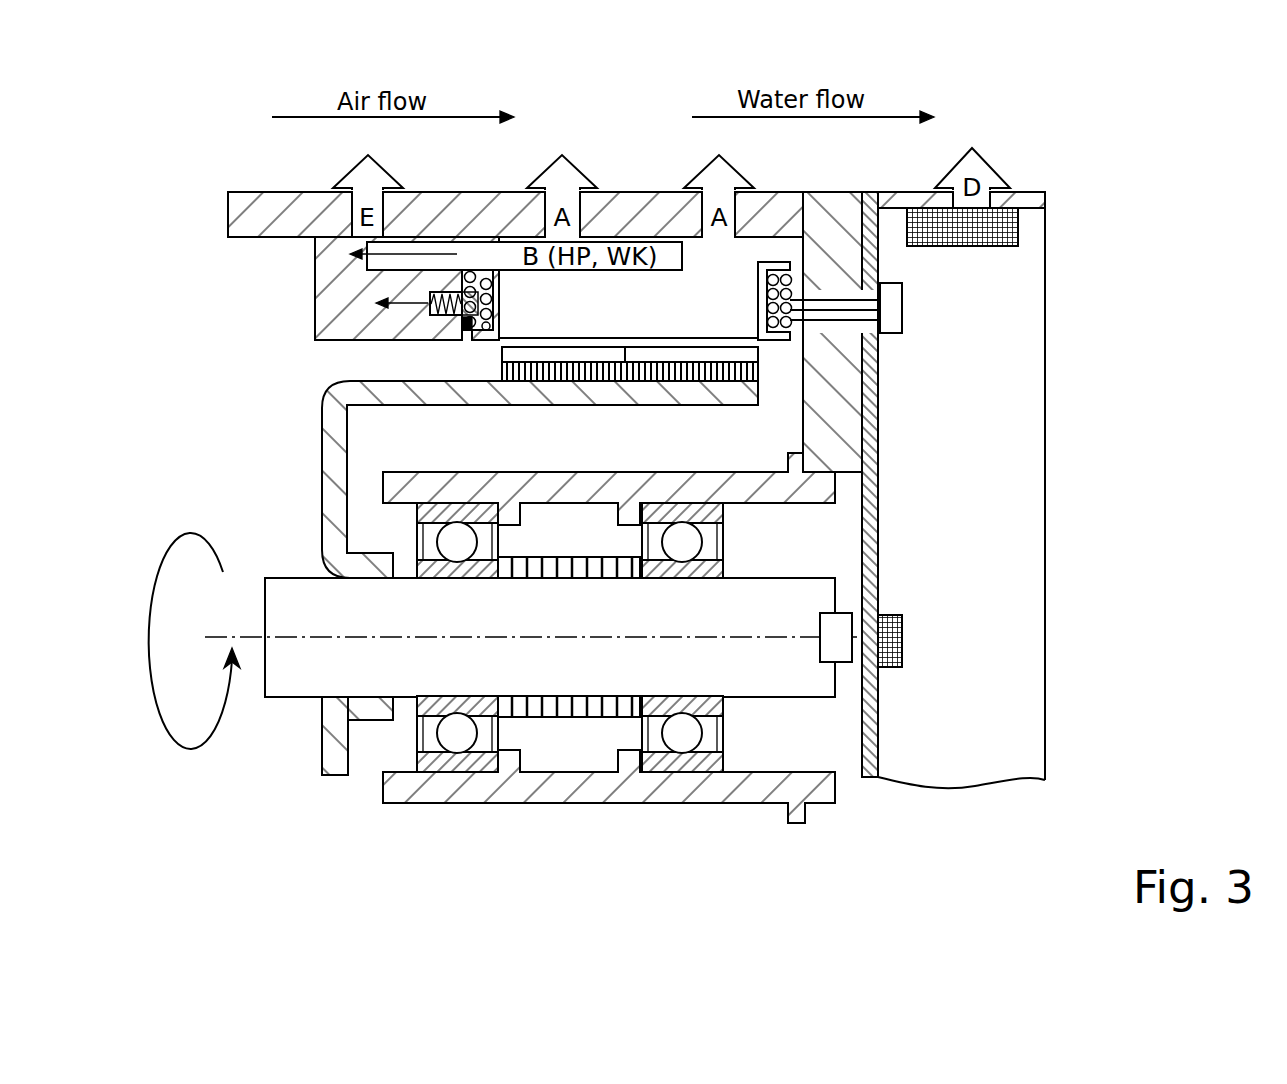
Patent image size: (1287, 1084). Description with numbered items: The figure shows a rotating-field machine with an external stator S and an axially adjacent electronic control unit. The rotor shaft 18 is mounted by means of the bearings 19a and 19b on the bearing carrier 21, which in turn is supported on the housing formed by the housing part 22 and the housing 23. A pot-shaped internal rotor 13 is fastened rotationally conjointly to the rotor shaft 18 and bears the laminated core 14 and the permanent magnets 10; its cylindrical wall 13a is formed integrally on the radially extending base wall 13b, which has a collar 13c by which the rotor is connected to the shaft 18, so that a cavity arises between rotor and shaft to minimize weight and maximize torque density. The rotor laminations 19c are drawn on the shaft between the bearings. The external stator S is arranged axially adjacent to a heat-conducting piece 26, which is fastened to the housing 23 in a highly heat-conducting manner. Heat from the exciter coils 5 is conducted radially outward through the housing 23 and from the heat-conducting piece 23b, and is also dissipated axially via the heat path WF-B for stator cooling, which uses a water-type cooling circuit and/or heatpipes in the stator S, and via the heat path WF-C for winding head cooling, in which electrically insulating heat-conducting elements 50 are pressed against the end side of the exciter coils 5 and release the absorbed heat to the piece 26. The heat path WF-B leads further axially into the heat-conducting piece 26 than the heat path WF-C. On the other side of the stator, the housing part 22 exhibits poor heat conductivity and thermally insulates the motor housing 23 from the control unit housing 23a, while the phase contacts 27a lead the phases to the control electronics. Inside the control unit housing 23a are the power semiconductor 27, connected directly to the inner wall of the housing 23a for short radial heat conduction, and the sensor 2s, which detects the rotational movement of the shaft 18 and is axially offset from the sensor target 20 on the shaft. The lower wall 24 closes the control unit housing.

The sensor 2s is at (903, 632).
The exciter coil 5 is at (485, 292).
The permanent magnets 10 is at (503, 350).
The pot-shaped internal rotor 13 is at (322, 463).
The cylindrical wall 13a is at (648, 395).
The base wall 13b is at (333, 485).
The collar 13c is at (363, 703).
The laminated core 14 is at (505, 382).
The rotor shaft 18 is at (288, 683).
The bearing 19a is at (478, 760).
The bearing 19b is at (657, 760).
The rotor 19c is at (575, 772).
The sensor target 20 is at (832, 655).
The bearing carrier 21 is at (833, 487).
The housing part 22 is at (852, 363).
The housing 23 is at (779, 217).
The ECU housing 23a is at (1045, 192).
The heat-conducting piece 23b is at (878, 562).
The housing bottom 24 is at (873, 707).
The heat-conducting piece 26 is at (330, 297).
The power semiconductor 27 is at (1003, 228).
The phase contact 27a is at (902, 303).
The heat-conducting element 50 is at (463, 295).
The external stator S is at (700, 278).
The heat path WF-B is at (315, 267).
The heat path WF-C is at (462, 321).